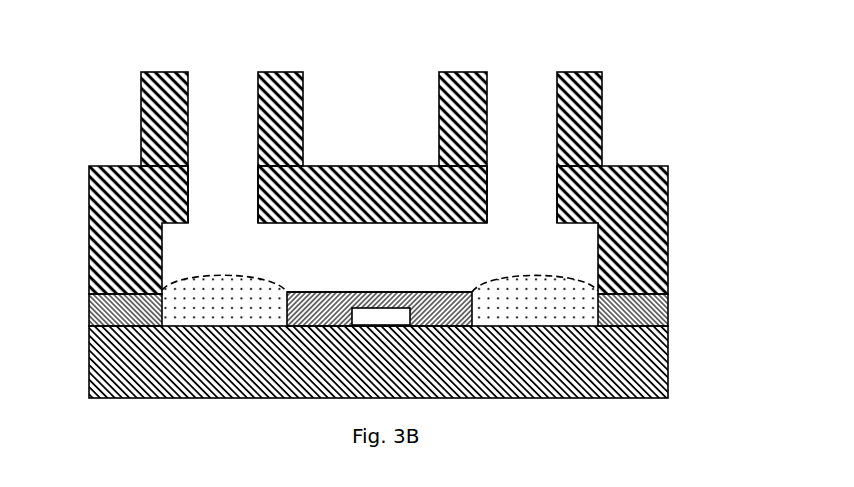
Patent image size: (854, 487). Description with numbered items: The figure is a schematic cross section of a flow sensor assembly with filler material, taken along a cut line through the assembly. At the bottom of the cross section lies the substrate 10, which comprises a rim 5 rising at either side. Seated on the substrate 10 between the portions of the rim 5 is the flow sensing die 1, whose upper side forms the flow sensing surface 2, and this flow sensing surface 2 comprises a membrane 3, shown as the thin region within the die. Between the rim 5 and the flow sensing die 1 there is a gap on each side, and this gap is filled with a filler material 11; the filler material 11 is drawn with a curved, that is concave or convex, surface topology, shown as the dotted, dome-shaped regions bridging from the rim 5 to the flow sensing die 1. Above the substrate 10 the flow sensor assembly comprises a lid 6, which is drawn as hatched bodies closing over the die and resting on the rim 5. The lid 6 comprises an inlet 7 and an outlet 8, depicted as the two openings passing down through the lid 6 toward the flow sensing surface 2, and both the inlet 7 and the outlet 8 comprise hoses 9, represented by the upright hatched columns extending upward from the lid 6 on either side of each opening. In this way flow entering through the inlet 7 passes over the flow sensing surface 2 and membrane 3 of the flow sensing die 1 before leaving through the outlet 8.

The flow sensing die 1 is at (307, 312).
The flow sensing surface 2 is at (324, 290).
The membrane 3 is at (388, 290).
The rim 5 is at (646, 311).
The lid 6 is at (112, 225).
The inlet 7 is at (224, 197).
The outlet 8 is at (521, 195).
The hoses 9 is at (581, 128).
The substrate 10 is at (603, 370).
The filler material 11 is at (178, 312).